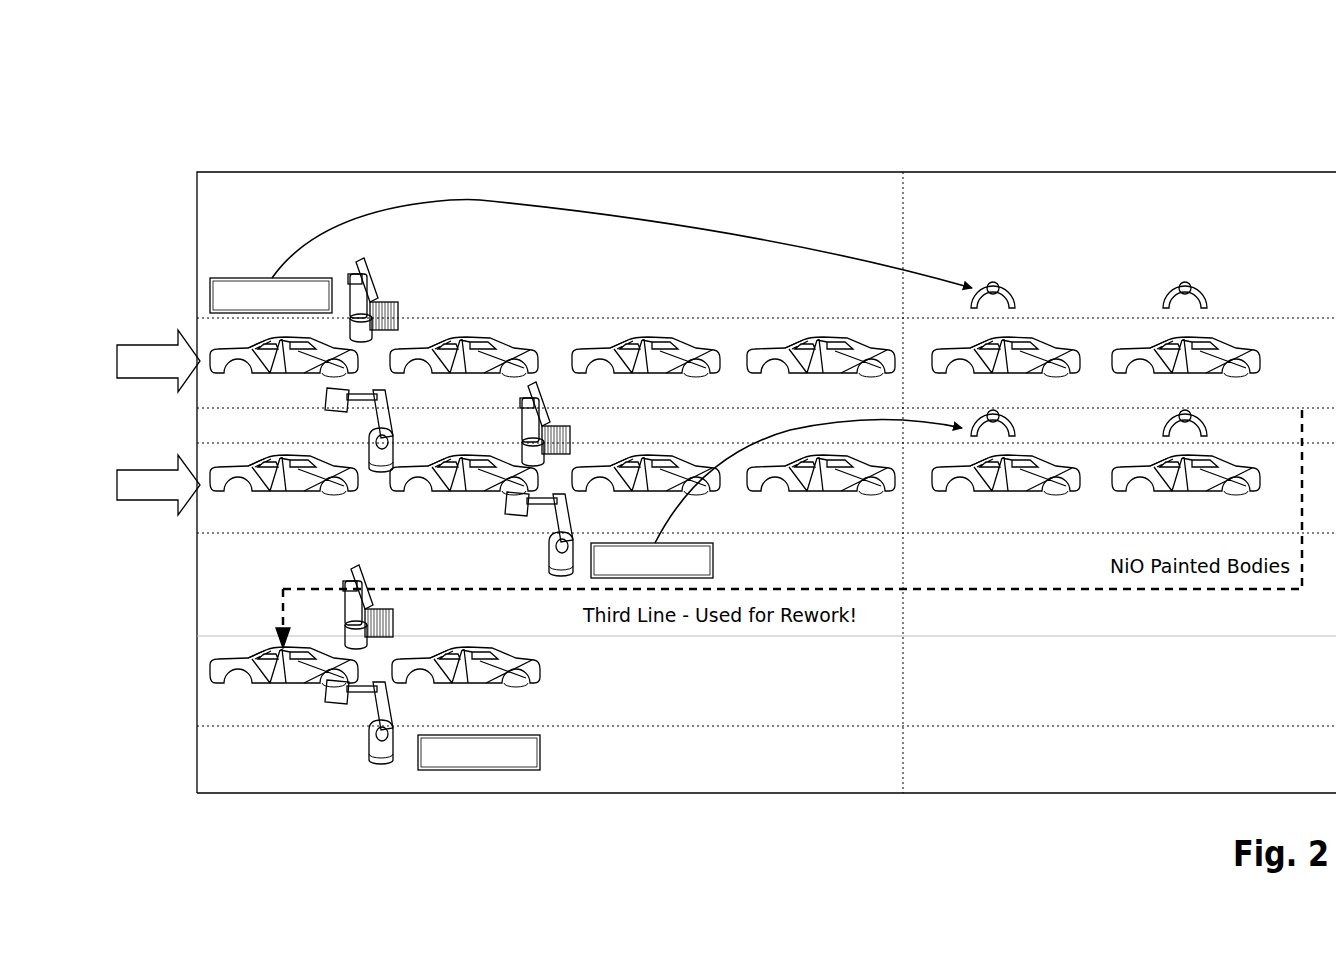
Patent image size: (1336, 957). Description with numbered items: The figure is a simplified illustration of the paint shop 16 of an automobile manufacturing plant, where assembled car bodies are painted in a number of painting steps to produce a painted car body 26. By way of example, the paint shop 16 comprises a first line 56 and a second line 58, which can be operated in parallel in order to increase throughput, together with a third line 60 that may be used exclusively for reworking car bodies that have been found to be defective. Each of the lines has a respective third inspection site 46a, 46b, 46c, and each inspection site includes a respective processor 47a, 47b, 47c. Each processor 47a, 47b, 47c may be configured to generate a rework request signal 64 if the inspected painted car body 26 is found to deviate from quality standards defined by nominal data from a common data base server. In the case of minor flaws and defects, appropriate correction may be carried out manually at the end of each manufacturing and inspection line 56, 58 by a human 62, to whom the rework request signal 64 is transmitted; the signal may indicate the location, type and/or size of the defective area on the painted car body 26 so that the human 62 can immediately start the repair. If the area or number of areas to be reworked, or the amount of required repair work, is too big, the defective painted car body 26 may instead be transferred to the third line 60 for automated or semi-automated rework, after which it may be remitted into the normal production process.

The paint shop 16 is at (1265, 126).
The painted car body 26 is at (278, 378).
The third inspection site 46a is at (392, 275).
The third inspection site 46b is at (582, 432).
The third inspection site 46c is at (362, 740).
The processor 47a is at (244, 277).
The processor 47b is at (713, 560).
The processor 47c is at (540, 752).
The first line 56 is at (527, 336).
The second line 58 is at (240, 508).
The third line 60 is at (240, 700).
The human 62 is at (1000, 286).
The rework request signal 64 is at (835, 254).